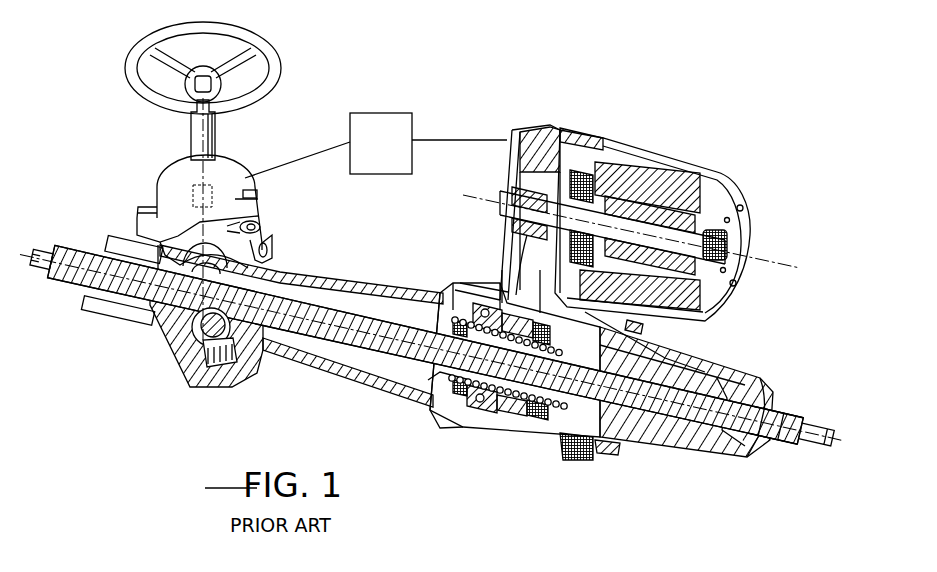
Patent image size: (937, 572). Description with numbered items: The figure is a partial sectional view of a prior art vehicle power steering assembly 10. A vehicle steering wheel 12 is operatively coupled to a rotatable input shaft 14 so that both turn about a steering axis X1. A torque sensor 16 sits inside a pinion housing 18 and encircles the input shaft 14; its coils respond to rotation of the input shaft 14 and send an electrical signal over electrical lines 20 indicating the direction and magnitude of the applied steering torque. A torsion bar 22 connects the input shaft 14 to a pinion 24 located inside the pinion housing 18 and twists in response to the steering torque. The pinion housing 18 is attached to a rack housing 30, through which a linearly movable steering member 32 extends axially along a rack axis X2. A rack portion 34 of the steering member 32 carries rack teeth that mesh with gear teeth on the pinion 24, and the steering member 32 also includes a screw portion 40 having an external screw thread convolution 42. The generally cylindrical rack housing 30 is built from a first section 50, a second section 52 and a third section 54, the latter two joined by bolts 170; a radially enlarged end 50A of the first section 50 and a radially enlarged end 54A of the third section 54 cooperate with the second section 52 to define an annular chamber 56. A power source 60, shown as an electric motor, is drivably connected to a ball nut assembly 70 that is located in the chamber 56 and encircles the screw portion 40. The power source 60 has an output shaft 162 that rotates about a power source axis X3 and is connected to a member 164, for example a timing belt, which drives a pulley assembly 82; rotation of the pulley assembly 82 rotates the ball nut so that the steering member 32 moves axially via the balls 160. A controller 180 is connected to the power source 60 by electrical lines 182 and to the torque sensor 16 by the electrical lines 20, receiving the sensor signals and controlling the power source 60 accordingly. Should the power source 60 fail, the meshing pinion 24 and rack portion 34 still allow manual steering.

The vehicle power steering assembly 10 is at (511, 86).
The vehicle steering wheel 12 is at (258, 40).
The rotatable input shaft 14 is at (215, 133).
The torque sensor 16 is at (237, 180).
The pinion housing 18 is at (257, 193).
The electrical lines 20 is at (294, 157).
The torsion bar 22 is at (210, 218).
The pinion 24 is at (194, 338).
The rack housing 30 is at (293, 358).
The linearly movable steering member 32 is at (76, 246).
The rack portion 34 is at (88, 286).
The screw portion 40 is at (785, 452).
The external screw thread convolution 42 is at (791, 410).
The first section 50 is at (307, 288).
The radially enlarged end 50A is at (428, 380).
The second section 52 is at (485, 421).
The third section 54 is at (697, 372).
The radially enlarged end 54A is at (578, 410).
The annular chamber 56 is at (423, 317).
The power source 60 is at (688, 163).
The ball nut assembly 70 is at (533, 415).
The pulley assembly 82 is at (510, 413).
The balls 160 is at (567, 462).
The output shaft 162 is at (685, 244).
The member 164 is at (534, 250).
The bolts 170 is at (643, 331).
The controller 180 is at (352, 112).
The electrical lines 182 is at (433, 139).
The steering axis X1 is at (196, 147).
The rack axis X2 is at (838, 435).
The power source axis X3 is at (763, 262).